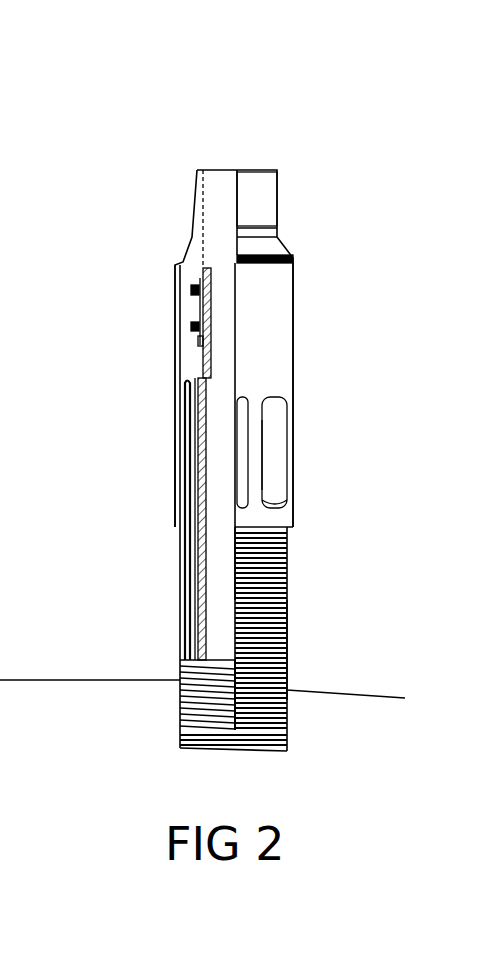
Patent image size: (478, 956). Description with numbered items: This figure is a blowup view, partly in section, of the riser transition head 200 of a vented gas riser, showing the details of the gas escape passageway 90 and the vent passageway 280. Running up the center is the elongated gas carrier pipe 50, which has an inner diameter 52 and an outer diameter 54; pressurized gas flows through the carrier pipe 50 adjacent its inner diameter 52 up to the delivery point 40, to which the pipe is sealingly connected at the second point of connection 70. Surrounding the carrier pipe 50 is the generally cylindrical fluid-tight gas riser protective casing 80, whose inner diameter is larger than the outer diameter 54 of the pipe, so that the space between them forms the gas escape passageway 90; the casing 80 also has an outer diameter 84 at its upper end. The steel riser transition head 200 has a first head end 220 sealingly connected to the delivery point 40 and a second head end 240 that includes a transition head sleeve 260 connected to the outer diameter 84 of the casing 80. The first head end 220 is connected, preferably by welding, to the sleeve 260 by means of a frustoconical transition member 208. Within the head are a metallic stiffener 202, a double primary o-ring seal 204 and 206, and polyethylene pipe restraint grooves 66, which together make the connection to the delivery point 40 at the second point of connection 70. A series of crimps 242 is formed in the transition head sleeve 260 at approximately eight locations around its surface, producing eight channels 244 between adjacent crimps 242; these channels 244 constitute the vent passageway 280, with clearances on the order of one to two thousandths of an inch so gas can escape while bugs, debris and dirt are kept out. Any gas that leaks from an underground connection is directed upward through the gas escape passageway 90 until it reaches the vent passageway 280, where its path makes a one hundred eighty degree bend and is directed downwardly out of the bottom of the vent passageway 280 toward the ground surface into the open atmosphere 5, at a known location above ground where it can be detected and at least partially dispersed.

The delivery point 40 is at (223, 170).
The first head end 220 is at (268, 198).
The metallic stiffener 202 is at (293, 255).
The riser transition head 200 is at (293, 313).
The transition head sleeve 260 is at (240, 407).
The second head end 240 is at (278, 437).
The crimps 242 is at (277, 470).
The channels 244 is at (255, 480).
The gas riser protective casing 80 is at (270, 604).
The outer diameter of casing 84 is at (287, 657).
The gas carrier pipe 50 is at (205, 562).
The inner diameter of carrier pipe 52 is at (205, 648).
The outer diameter of carrier pipe 54 is at (185, 635).
The second point of connection 70 is at (175, 277).
The frustoconical transition member 208 is at (180, 268).
The primary o-ring seal 204 is at (190, 290).
The polyethylene pipe restraint grooves 66 is at (190, 324).
The primary o-ring seal 206 is at (195, 342).
The gas escape passageway 90 is at (195, 430).
The vent passageway 280 is at (183, 380).
The atmosphere 5 is at (115, 533).